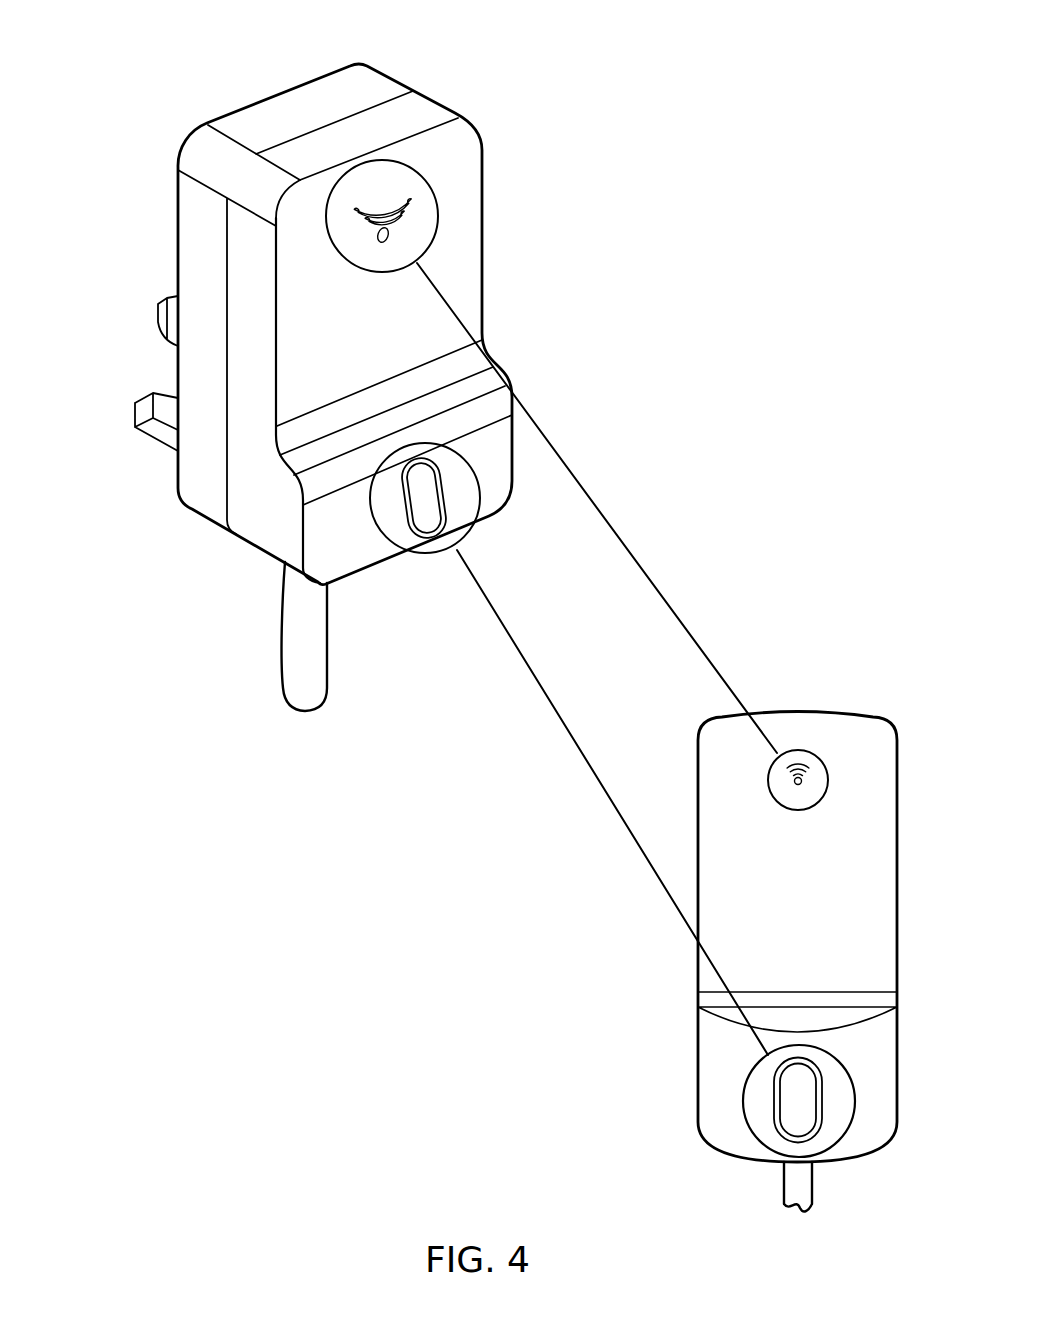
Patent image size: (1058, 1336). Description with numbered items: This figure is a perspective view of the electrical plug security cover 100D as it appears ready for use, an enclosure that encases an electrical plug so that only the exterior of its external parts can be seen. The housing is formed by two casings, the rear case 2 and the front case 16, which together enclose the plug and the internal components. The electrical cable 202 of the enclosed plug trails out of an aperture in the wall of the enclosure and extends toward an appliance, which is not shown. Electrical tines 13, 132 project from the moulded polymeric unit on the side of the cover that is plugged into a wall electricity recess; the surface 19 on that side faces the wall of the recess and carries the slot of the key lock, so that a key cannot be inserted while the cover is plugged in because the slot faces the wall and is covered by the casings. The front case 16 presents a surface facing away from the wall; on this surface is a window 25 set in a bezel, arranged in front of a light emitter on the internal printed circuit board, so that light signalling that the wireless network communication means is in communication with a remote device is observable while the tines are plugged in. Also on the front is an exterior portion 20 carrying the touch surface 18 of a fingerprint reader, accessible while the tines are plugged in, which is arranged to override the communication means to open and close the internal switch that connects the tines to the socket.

The electrical plug security cover 100D is at (567, 58).
The rear case 2 is at (277, 112).
The tine 13 is at (157, 311).
The surface 19 is at (177, 382).
The tine 132 is at (137, 424).
The window 25 is at (397, 233).
The front case 16 is at (468, 267).
The exterior portion 20 is at (495, 487).
The touch surface 18 is at (425, 507).
The electrical cable 202 is at (285, 652).